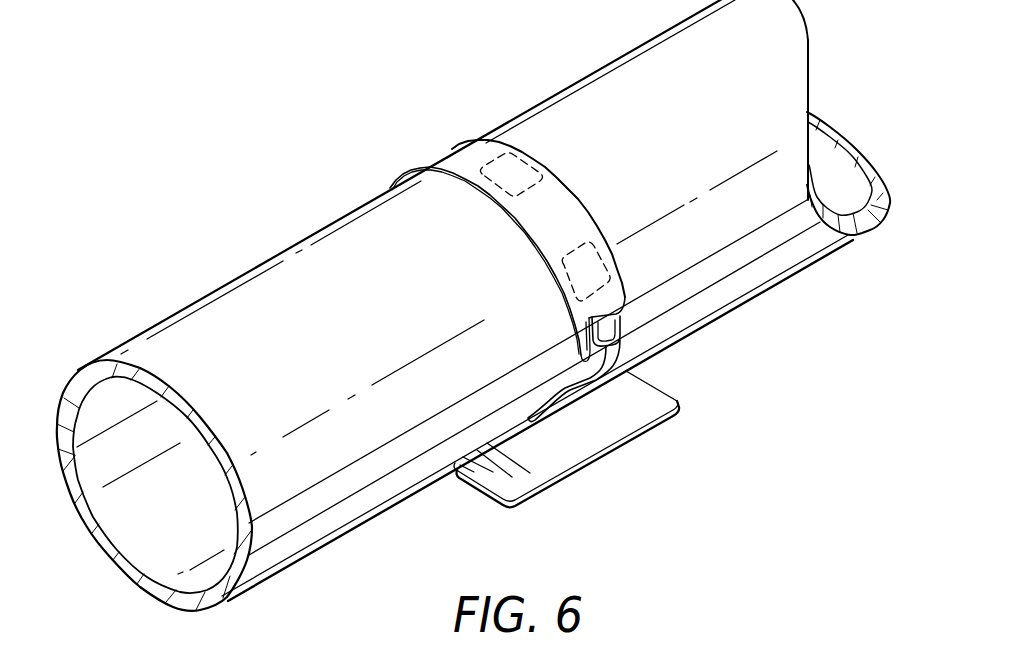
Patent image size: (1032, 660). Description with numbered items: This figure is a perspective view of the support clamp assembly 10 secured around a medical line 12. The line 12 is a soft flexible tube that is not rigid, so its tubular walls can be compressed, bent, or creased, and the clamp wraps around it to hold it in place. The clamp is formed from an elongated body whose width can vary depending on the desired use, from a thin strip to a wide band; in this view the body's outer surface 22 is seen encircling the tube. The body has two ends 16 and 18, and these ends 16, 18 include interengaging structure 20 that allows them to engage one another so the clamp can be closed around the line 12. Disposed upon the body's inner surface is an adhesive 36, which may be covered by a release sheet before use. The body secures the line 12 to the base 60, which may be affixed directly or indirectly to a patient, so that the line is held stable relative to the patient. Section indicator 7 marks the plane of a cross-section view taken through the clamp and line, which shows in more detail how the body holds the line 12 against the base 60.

The support clamp assembly 10 is at (428, 140).
The medical line 12 is at (197, 300).
The end 16 is at (571, 318).
The end 18 is at (560, 398).
The interengaging structure 20 is at (622, 342).
The outer surface 22 is at (476, 142).
The adhesive 36 is at (589, 246).
The base 60 is at (597, 462).
The section line 7- 7 is at (285, 60).